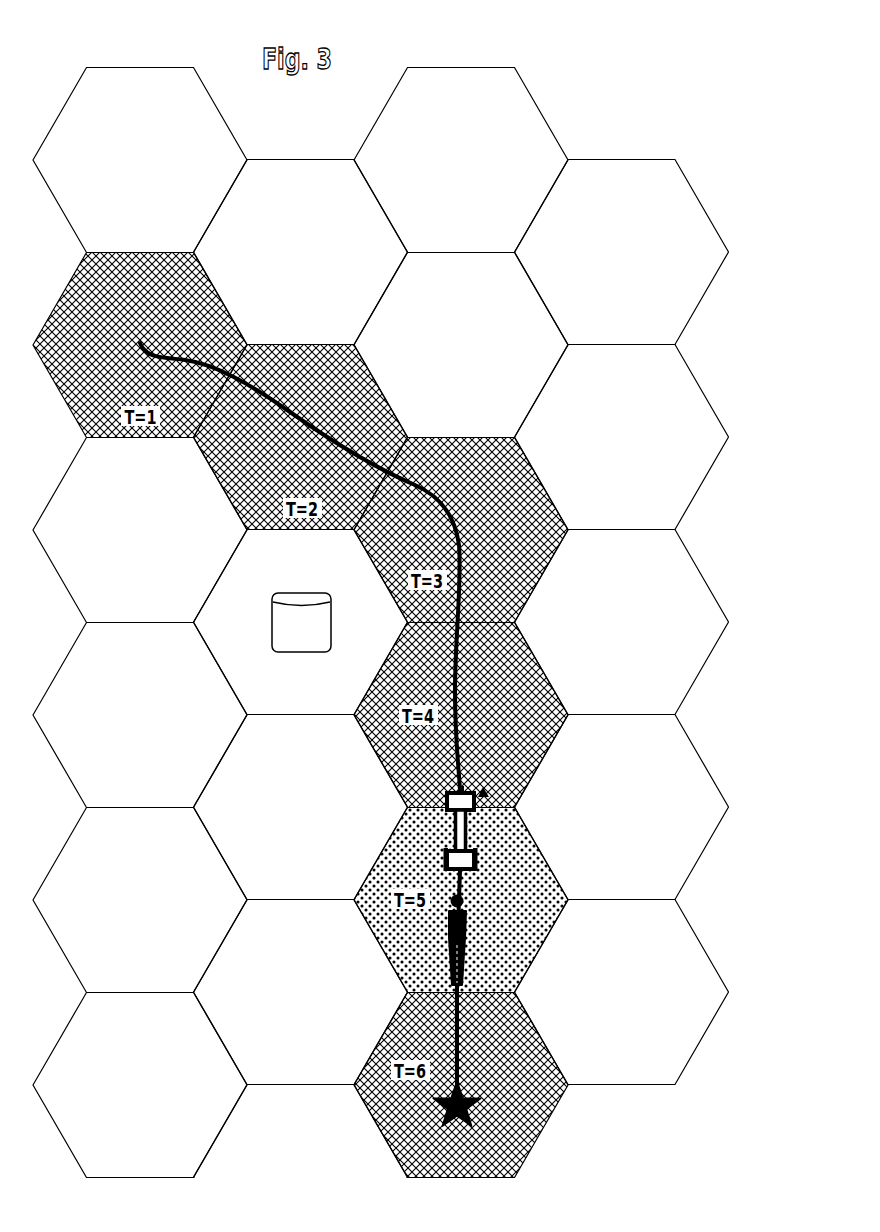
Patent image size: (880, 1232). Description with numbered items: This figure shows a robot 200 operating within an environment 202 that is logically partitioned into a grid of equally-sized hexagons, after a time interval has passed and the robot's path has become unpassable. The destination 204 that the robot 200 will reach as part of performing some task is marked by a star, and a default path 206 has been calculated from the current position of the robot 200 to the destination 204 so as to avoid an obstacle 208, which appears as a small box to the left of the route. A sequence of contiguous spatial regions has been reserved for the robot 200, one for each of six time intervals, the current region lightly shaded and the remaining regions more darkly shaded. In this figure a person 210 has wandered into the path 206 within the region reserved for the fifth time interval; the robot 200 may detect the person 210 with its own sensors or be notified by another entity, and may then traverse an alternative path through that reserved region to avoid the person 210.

The robot 200 is at (486, 816).
The environment 202 is at (712, 178).
The destination 204 is at (470, 1115).
The path 206 is at (410, 483).
The obstacle 208 is at (270, 623).
The person 210 is at (468, 916).